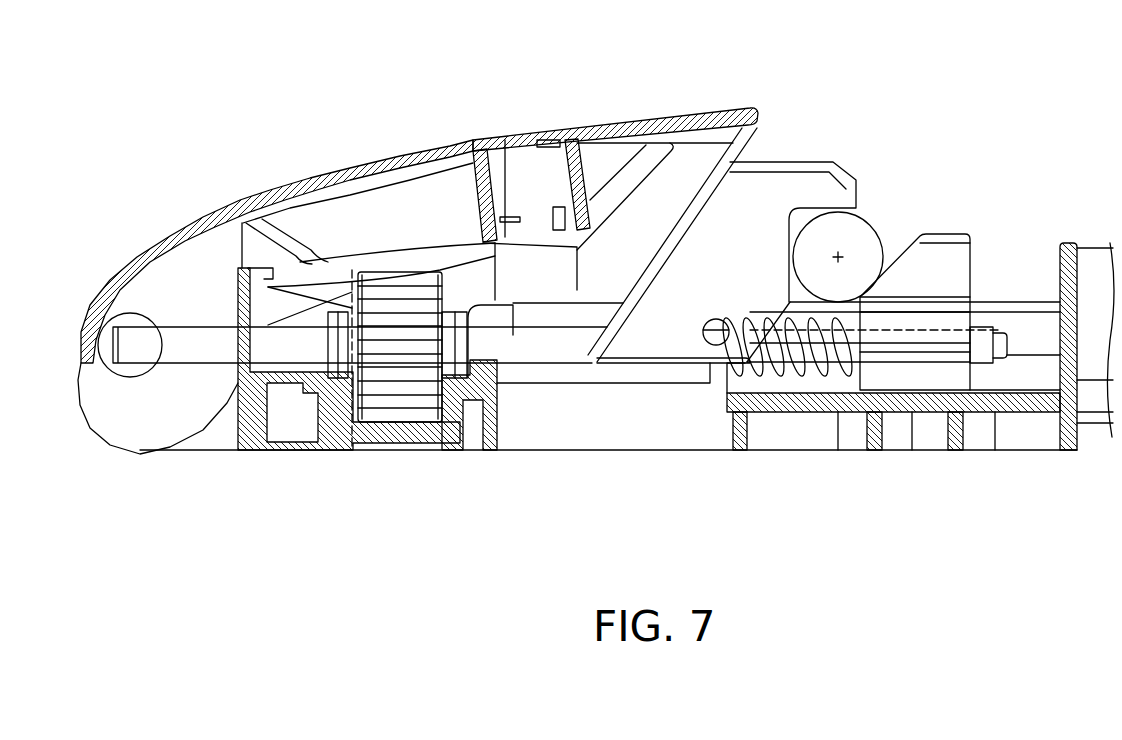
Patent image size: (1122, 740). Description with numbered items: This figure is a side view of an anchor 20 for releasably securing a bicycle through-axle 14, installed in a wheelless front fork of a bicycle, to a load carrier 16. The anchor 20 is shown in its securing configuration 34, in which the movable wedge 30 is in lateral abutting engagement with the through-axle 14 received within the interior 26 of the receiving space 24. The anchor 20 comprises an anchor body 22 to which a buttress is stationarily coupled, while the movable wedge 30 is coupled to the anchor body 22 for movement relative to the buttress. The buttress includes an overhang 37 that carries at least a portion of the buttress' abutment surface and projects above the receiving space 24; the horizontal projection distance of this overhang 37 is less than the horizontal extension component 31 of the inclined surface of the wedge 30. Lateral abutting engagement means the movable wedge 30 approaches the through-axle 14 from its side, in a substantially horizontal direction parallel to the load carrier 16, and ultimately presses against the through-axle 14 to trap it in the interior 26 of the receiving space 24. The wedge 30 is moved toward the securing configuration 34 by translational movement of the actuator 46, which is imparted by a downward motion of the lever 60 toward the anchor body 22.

The bicycle through-axle 14 is at (842, 280).
The load carrier 16 is at (1093, 283).
The anchor 20 is at (800, 94).
The anchor body 22 is at (443, 487).
The receiving space 24 is at (880, 197).
The interior 26 is at (830, 218).
The movable wedge 30 is at (940, 226).
The horizontal extension component 31 is at (900, 272).
The securing configuration 34 is at (996, 126).
The overhang 37 is at (830, 180).
The actuator 46 is at (557, 348).
The lever 60 is at (693, 118).